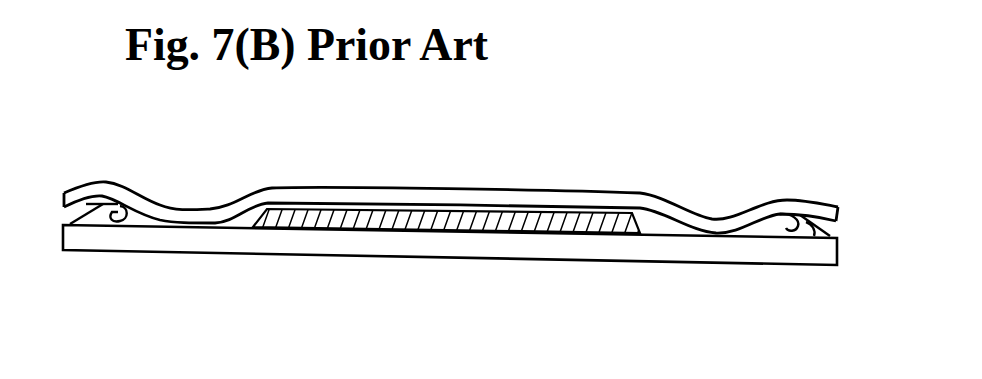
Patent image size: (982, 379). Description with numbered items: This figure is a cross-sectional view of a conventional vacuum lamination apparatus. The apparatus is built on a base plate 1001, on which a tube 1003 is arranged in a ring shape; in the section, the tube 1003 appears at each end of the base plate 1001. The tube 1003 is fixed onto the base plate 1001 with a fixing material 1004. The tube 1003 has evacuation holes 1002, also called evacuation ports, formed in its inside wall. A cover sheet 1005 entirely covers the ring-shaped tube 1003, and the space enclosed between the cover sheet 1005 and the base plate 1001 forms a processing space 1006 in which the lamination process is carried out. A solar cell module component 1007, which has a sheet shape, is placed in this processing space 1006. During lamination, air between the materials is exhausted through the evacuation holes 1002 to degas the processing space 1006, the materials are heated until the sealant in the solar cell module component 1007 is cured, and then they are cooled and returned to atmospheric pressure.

The base plate 1001 is at (610, 253).
The evacuation holes 1002 is at (130, 222).
The tube 1003 is at (794, 216).
The fixing material 1004 is at (792, 236).
The cover sheet 1005 is at (500, 200).
The processing space 1006 is at (253, 216).
The solar cell module component 1007 is at (437, 224).